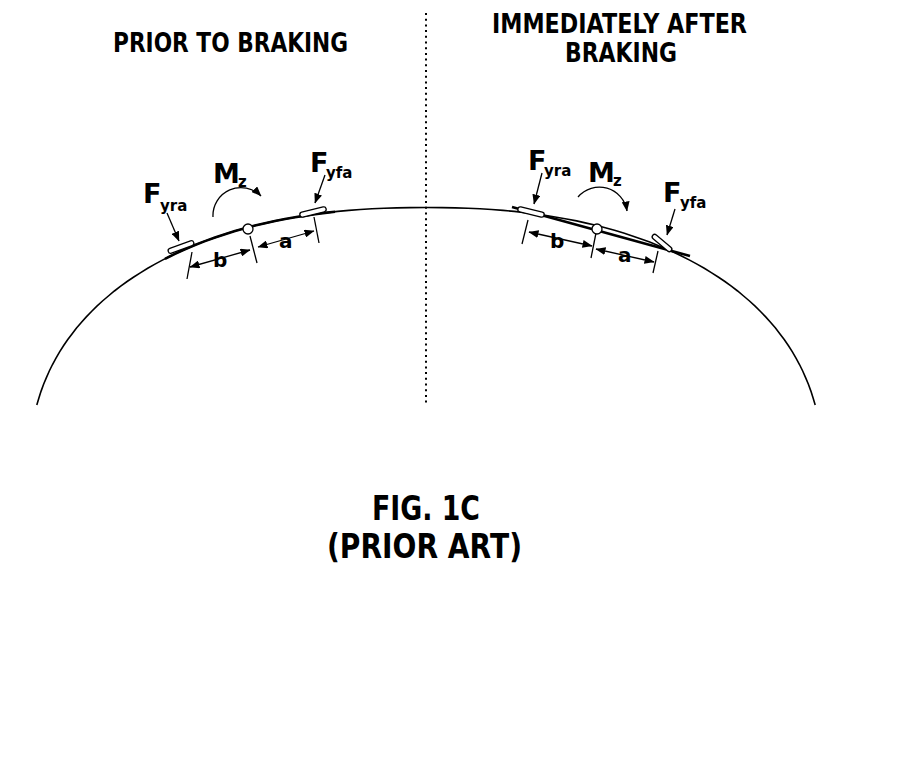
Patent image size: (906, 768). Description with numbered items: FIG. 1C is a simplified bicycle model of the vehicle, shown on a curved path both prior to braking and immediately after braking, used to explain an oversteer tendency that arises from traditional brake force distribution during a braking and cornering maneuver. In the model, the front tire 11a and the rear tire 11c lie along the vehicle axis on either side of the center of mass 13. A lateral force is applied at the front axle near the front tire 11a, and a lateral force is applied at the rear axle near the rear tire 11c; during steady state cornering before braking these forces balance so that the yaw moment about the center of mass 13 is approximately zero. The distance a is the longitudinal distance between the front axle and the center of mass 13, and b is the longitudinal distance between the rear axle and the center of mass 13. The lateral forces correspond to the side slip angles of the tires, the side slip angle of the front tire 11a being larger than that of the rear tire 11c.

The rear tire 11c is at (169, 248).
The front tire 11a is at (353, 206).
The center of mass 13 is at (245, 224).